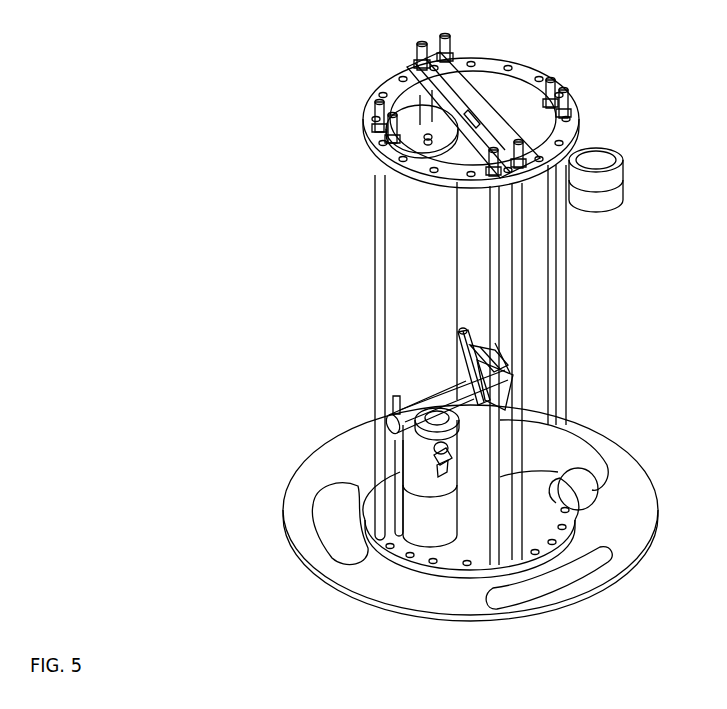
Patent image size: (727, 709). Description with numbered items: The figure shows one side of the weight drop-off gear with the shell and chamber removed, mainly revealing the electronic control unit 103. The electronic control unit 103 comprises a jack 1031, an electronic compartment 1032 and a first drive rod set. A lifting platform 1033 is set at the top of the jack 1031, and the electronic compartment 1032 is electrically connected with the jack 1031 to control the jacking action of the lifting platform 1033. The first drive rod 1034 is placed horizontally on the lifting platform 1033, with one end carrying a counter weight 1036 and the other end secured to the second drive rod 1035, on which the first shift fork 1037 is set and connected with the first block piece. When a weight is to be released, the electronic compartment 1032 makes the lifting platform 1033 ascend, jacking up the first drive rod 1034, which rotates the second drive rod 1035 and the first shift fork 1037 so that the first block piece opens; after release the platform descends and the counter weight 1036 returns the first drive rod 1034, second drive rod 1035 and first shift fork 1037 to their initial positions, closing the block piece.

The electronic control unit 103 is at (312, 400).
The jack 1031 is at (415, 478).
The electronic compartment 1032 is at (400, 245).
The lifting platform 1033 is at (445, 402).
The first drive rod 1034 is at (460, 382).
The second drive rod 1035 is at (472, 334).
The counter weight 1036 is at (387, 413).
The first shift fork 1037 is at (458, 329).